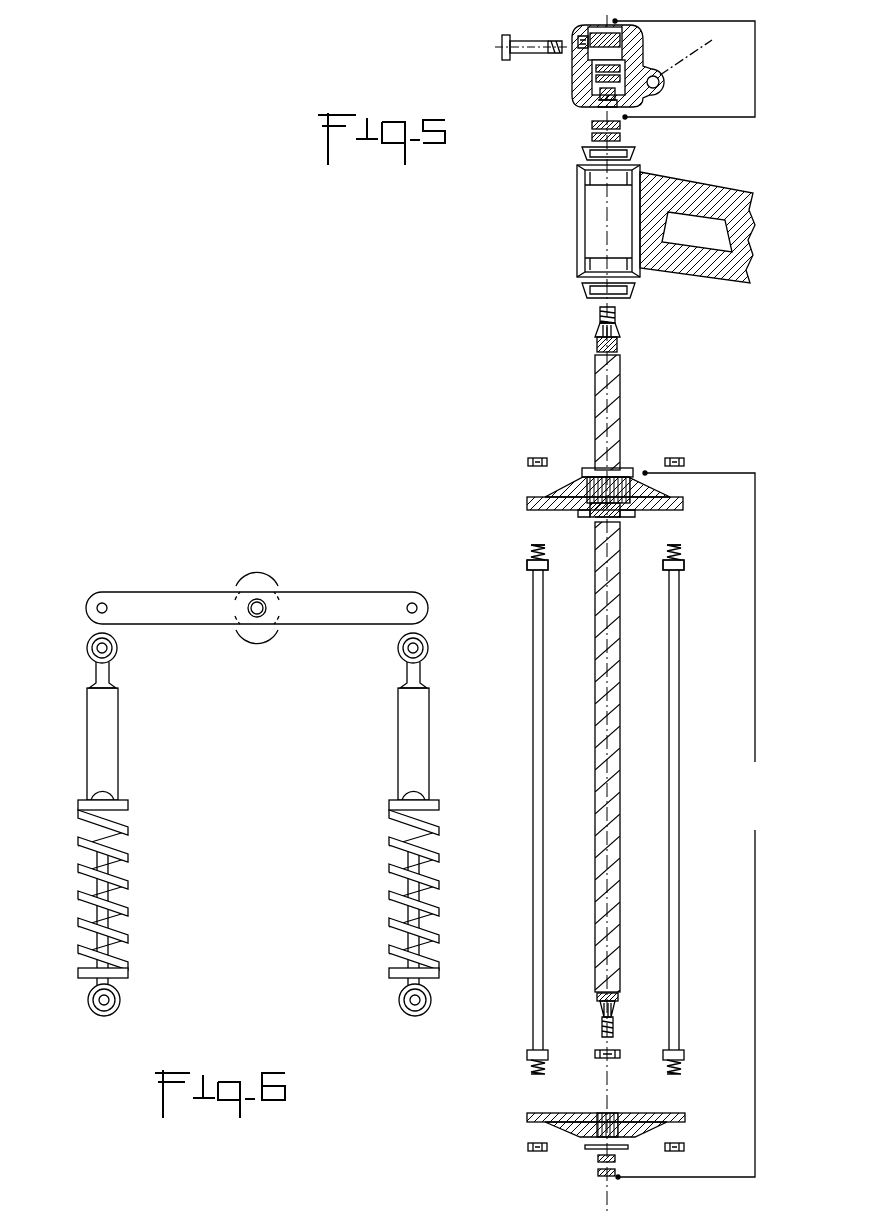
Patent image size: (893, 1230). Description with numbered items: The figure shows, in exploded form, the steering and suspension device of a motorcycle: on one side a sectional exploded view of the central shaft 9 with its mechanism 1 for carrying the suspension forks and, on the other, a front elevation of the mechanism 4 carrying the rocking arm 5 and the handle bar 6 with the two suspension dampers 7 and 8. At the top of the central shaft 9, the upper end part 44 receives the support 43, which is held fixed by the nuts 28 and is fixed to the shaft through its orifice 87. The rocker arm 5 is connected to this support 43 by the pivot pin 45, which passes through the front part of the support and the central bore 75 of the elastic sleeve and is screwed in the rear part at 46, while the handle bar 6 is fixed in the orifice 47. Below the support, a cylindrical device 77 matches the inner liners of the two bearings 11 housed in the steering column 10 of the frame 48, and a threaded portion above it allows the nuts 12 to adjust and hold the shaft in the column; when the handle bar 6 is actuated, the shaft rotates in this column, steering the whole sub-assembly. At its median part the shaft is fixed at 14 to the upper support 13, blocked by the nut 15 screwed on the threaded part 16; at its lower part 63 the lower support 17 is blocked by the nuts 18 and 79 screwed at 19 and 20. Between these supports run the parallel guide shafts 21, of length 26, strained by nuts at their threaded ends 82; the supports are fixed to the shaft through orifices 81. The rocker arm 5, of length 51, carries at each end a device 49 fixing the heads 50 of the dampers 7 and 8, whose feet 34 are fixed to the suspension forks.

In FIG. 5, the mechanism 1 is at (689, 825).
In FIG. 5, the mechanism 4 is at (686, 69).
In FIG. 5, the rocking arm 5 is at (628, 33).
In FIG. 6, the rocking arm 5 is at (190, 616).
In FIG. 5, the handle bar 6 is at (675, 58).
In FIG. 6, the suspension damper 7 is at (413, 779).
In FIG. 6, the suspension damper 8 is at (105, 779).
In FIG. 5, the central shaft 9 is at (607, 637).
In FIG. 5, the steering column 10 is at (574, 213).
In FIG. 5, the bearings 11 is at (608, 221).
In FIG. 5, the nuts 12 is at (625, 125).
In FIG. 5, the upper support 13 is at (527, 503).
In FIG. 5, the fixing point of upper support 14 is at (602, 490).
In FIG. 5, the nut 15 is at (640, 514).
In FIG. 5, the threaded part 16 is at (612, 522).
In FIG. 5, the lower support 17 is at (527, 1118).
In FIG. 5, the nut 18 is at (620, 1162).
In FIG. 5, the threaded point 19 is at (623, 997).
In FIG. 5, the threaded point 20 is at (618, 1027).
In FIG. 5, the pair of guide shafts 21 is at (675, 750).
In FIG. 5, the length of guide shafts 26 is at (527, 566).
In FIG. 5, the nuts 28 is at (578, 105).
In FIG. 6, the feet of suspension dampers 34 is at (87, 1000).
In FIG. 5, the support 43 is at (568, 93).
In FIG. 5, the upper end part 44 is at (622, 328).
In FIG. 5, the pivot pin 45 is at (532, 50).
In FIG. 5, the screw point 46 is at (640, 65).
In FIG. 5, the orifice 47 is at (660, 82).
In FIG. 5, the frame 48 is at (706, 203).
In FIG. 6, the fixing device 49 is at (82, 607).
In FIG. 6, the heads of suspension dampers 50 is at (84, 647).
In FIG. 6, the length of rocker arm 51 is at (104, 609).
In FIG. 5, the lower part 63 is at (620, 1010).
In FIG. 6, the central bore 75 is at (258, 626).
In FIG. 5, the cylindrical device 77 is at (607, 392).
In FIG. 5, the nut 79 is at (622, 1053).
In FIG. 5, the orifices 81 is at (607, 1108).
In FIG. 5, the threaded ends 82 is at (530, 553).
In FIG. 5, the orifice 87 is at (598, 108).